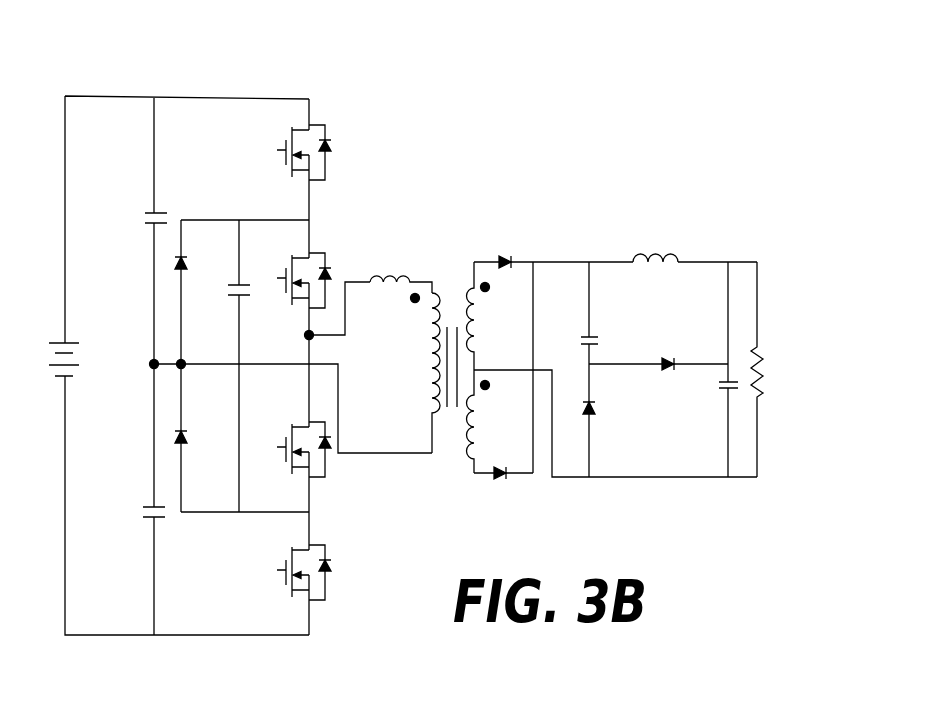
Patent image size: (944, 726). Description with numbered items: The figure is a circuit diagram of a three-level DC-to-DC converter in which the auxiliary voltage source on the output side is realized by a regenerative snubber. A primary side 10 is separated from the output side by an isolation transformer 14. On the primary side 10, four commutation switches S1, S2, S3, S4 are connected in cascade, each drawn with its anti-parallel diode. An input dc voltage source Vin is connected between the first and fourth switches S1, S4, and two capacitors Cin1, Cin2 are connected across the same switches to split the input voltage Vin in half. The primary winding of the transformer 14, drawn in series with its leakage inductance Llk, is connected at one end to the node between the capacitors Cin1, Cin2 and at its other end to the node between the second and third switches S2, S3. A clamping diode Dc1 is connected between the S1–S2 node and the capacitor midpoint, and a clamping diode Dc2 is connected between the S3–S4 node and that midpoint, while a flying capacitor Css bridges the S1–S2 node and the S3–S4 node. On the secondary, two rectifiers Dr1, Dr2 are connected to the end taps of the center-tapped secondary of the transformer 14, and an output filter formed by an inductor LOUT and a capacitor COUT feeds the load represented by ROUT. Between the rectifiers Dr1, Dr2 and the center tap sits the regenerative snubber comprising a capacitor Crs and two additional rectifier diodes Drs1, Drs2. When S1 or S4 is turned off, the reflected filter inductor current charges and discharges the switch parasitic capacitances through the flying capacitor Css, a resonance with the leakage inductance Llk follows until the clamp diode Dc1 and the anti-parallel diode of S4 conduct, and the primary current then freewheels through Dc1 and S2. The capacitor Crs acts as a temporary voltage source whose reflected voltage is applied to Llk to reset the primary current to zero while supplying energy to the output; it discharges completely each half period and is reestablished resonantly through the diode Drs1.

The primary side 10 is at (197, 79).
The isolation transformer 14 is at (548, 196).
The input dc voltage source Vin is at (51, 346).
The input capacitor Cin1 is at (137, 204).
The input capacitor Cin2 is at (135, 496).
The clamping diode Dc1 is at (198, 292).
The clamping diode Dc2 is at (197, 438).
The flying capacitor Css is at (253, 366).
The first commutation switch S1 is at (296, 152).
The second commutation switch S2 is at (296, 278).
The third commutation switch S3 is at (294, 447).
The fourth commutation switch S4 is at (294, 569).
The leakage inductance Llk is at (400, 295).
The rectifier Dr1 is at (510, 280).
The rectifier Dr2 is at (502, 459).
The auxiliary capacitor Crs is at (604, 313).
The rectifier diode Drs1 is at (609, 420).
The rectifier diode Drs2 is at (658, 378).
The output filter inductor LOUT is at (658, 277).
The output filter capacitor COUT is at (700, 369).
The output load ROUT is at (785, 369).